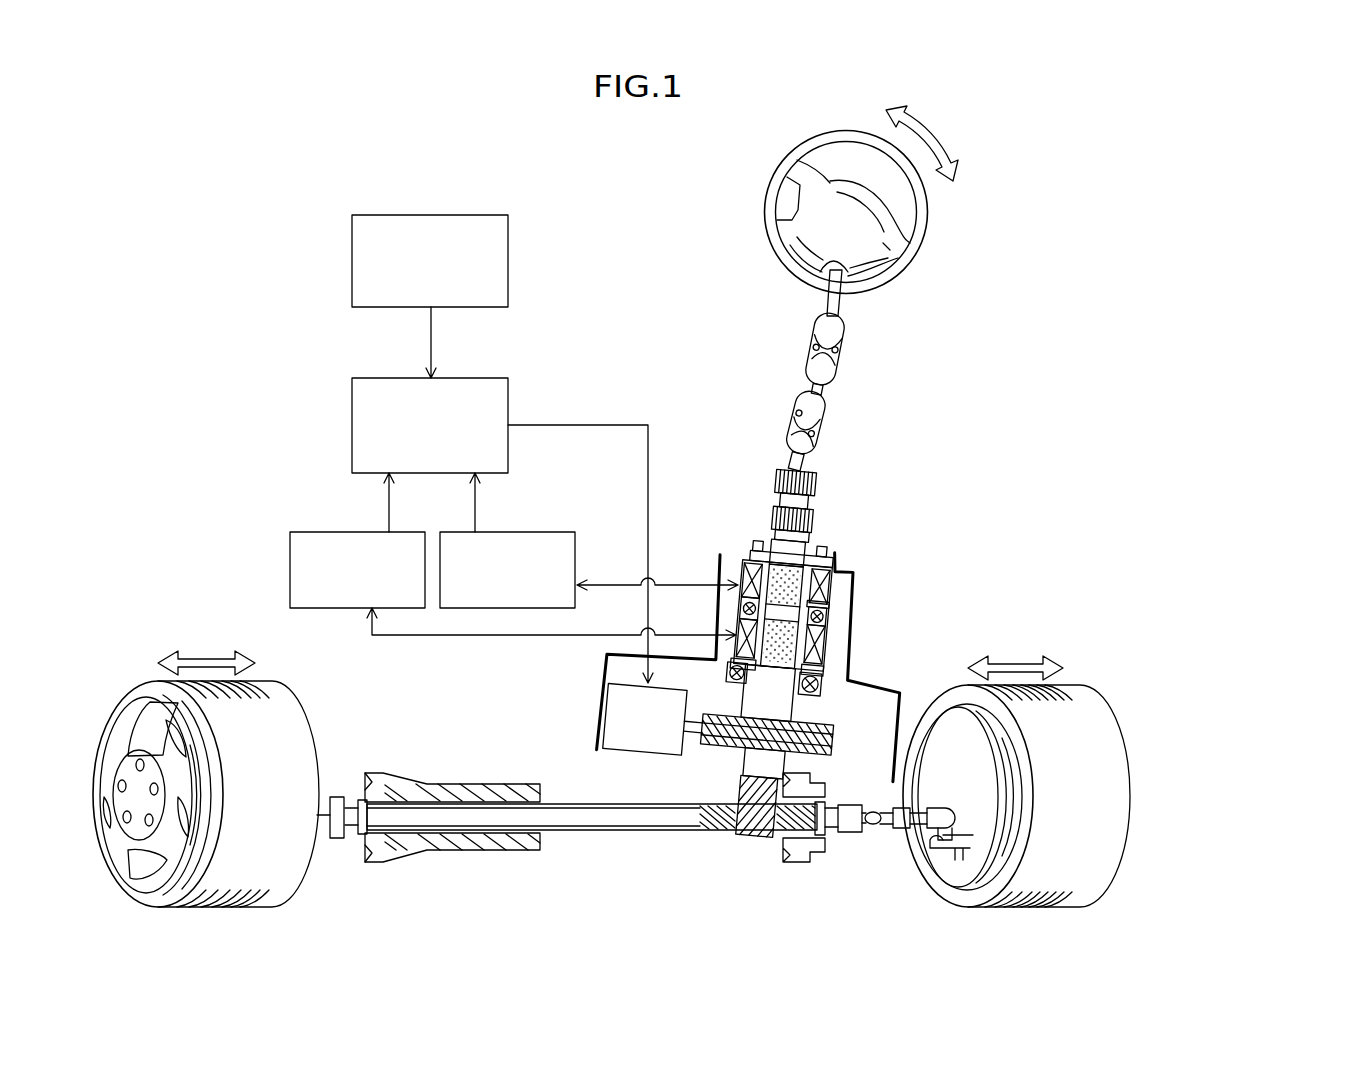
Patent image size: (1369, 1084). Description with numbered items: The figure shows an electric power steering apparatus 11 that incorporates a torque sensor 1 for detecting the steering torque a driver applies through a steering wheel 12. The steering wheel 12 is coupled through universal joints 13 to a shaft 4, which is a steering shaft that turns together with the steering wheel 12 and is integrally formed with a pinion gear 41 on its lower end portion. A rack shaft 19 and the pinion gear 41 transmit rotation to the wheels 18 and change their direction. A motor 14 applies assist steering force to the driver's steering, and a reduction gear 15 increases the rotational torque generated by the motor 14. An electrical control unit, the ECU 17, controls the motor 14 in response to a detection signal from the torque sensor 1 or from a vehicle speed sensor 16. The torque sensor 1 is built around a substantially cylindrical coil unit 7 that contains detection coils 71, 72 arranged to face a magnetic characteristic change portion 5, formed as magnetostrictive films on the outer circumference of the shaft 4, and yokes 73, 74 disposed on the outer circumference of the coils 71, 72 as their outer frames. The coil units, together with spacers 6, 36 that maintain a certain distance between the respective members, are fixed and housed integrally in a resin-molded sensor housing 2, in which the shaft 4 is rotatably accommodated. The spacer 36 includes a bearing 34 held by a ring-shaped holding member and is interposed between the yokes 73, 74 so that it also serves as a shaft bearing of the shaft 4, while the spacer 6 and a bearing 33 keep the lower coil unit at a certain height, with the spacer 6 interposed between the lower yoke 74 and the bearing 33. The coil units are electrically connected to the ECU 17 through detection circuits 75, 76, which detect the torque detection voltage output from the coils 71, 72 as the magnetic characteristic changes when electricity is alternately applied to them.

The torque sensor 1 is at (856, 522).
The sensor housing 2 is at (600, 683).
The shaft 4 is at (822, 500).
The magnetic characteristic change portion 5 is at (780, 575).
The spacer 6 is at (823, 673).
The coil unit 7 is at (834, 563).
The electric power steering apparatus 11 is at (996, 325).
The steering wheel 12 is at (766, 213).
The universal joint 13 is at (823, 403).
The motor 14 is at (622, 757).
The reduction gear 15 is at (718, 754).
The vehicle speed sensor 16 is at (463, 215).
The electrical control unit (ECU) 17 is at (395, 378).
The wheel 18 is at (290, 690).
The rack shaft 19 is at (615, 832).
The bearing 33 is at (815, 693).
The bearing 34 is at (827, 627).
The spacer 36 is at (830, 612).
The pinion gear 41 is at (755, 840).
The coil 71 is at (738, 577).
The coil 72 is at (736, 630).
The yoke 73 is at (825, 600).
The yoke 74 is at (735, 668).
The detection circuit 75 is at (537, 530).
The detection circuit 76 is at (325, 530).